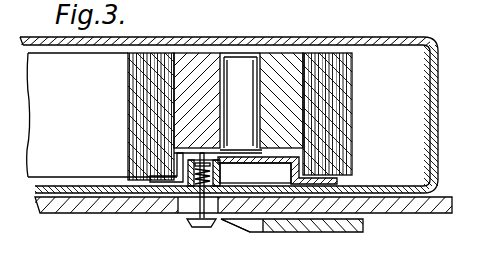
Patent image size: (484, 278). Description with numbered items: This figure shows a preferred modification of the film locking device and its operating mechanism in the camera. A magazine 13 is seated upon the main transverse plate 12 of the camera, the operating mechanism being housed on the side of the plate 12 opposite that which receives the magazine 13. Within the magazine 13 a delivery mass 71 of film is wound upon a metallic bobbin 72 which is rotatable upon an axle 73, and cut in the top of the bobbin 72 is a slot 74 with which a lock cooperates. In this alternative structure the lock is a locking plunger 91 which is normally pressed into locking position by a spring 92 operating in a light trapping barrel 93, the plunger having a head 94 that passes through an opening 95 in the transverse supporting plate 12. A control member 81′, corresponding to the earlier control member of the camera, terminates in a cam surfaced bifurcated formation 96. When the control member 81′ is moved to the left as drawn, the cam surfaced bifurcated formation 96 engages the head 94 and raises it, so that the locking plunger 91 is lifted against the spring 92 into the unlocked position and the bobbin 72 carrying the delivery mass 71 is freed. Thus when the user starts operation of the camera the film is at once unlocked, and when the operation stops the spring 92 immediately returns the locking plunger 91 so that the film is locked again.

The magazine 13 is at (402, 33).
The main transverse plate 12 is at (405, 205).
The delivery mass 71 is at (342, 106).
The metallic bobbin 72 is at (197, 80).
The axle 73 is at (240, 77).
The slot 74 is at (292, 154).
The locking plunger 91 is at (143, 112).
The spring 92 is at (190, 181).
The light trapping barrel 93 is at (183, 165).
The head 94 is at (203, 228).
The opening 95 is at (188, 212).
The cam surfaced bifurcated formation 96 is at (243, 232).
The control member 81′ is at (313, 228).